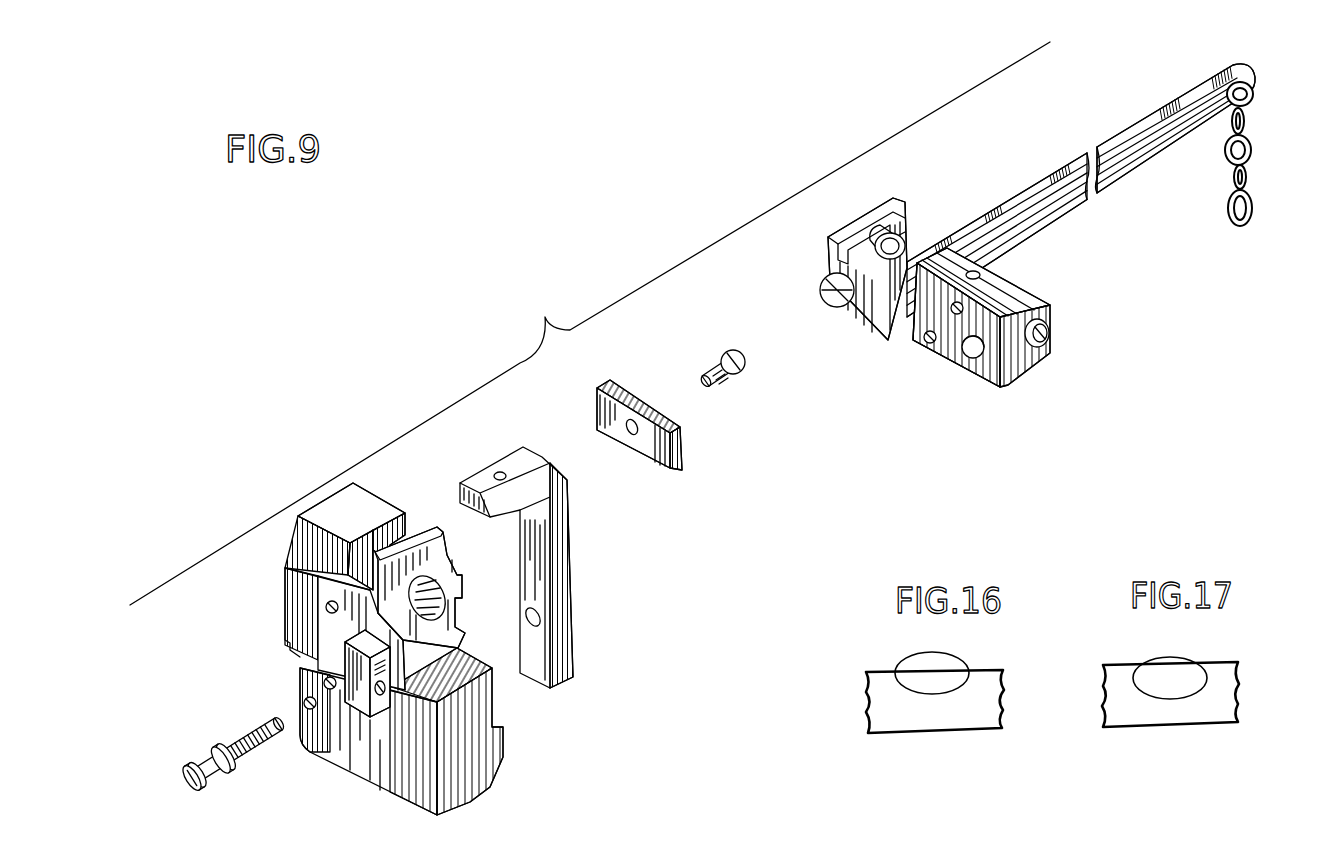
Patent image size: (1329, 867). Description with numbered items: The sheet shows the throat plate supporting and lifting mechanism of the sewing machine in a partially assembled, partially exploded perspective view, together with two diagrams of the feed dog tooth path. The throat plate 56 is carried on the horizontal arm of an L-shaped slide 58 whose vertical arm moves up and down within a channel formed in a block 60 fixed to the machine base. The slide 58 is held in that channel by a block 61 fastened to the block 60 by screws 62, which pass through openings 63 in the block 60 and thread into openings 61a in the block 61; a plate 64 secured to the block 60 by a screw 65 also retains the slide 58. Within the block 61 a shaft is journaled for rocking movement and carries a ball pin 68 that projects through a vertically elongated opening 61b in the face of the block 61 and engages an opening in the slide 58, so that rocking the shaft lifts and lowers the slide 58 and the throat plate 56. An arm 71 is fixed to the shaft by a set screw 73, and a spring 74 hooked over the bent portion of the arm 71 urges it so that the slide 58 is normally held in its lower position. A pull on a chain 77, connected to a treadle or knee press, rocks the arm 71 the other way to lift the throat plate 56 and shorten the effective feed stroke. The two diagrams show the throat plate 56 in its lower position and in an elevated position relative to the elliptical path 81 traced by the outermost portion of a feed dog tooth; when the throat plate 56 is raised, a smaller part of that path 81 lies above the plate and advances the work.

In FIG. 16, the throat plate 56 is at (988, 697).
In FIG. 17, the throat plate 56 is at (1230, 698).
In FIG. 9, the L-shaped slide 58 is at (566, 572).
In FIG. 9, the block 60 is at (302, 607).
In FIG. 9, the block 61 is at (1020, 283).
In FIG. 9, the openings 61a is at (957, 318).
In FIG. 9, the vertically elongated opening 61b is at (990, 382).
In FIG. 9, the screws 62 is at (187, 767).
In FIG. 9, the openings 63 is at (302, 700).
In FIG. 9, the plate 64 is at (681, 452).
In FIG. 9, the screw 65 is at (742, 373).
In FIG. 9, the ball pin 68 is at (977, 355).
In FIG. 9, the arm 71 is at (1037, 176).
In FIG. 9, the set screw 73 is at (823, 293).
In FIG. 9, the spring 74 is at (917, 233).
In FIG. 9, the chain 77 is at (1233, 232).
In FIG. 16, the elliptical path 81 is at (955, 656).
In FIG. 17, the elliptical path 81 is at (1190, 657).